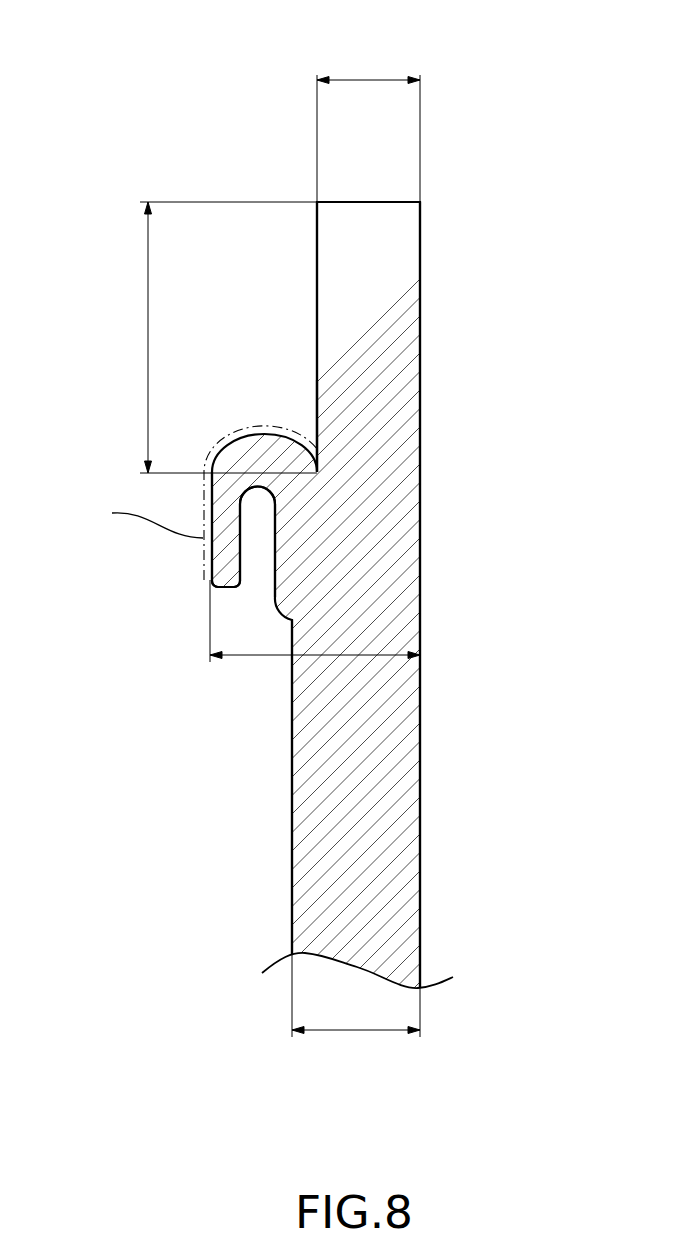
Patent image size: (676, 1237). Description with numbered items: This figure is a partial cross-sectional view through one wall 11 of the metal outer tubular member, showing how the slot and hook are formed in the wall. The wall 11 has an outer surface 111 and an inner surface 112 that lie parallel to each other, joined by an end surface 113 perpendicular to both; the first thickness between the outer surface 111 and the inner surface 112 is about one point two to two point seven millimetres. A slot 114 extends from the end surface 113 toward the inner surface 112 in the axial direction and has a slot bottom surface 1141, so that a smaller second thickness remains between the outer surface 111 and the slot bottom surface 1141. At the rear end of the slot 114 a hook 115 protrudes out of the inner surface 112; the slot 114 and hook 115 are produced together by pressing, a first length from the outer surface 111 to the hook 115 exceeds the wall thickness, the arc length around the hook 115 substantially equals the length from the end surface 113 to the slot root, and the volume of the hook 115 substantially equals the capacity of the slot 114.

The wall 11 is at (122, 65).
The outer surface 111 is at (420, 387).
The inner surface 112 is at (292, 765).
The end surface 113 is at (353, 202).
The slot 114 is at (302, 290).
The slot bottom surface 1141 is at (315, 385).
The hook 115 is at (224, 570).